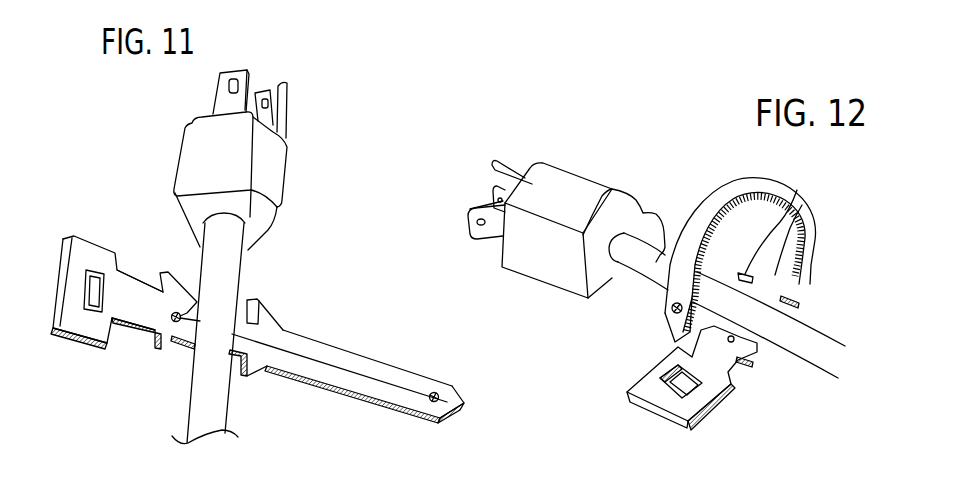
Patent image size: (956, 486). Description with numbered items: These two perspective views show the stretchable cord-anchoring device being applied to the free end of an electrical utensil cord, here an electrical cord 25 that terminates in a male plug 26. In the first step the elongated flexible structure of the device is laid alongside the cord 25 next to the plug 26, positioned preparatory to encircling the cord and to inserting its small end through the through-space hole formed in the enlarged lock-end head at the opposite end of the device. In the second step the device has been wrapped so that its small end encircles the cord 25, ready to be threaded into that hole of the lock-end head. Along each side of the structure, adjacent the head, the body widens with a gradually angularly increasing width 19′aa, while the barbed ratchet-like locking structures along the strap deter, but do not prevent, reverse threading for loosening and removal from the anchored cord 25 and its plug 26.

In FIG. 11, the male plug 26 is at (270, 166).
In FIG. 12, the male plug 26 is at (555, 263).
In FIG. 11, the electrical cord free-end 25 is at (207, 405).
In FIG. 12, the electrical cord free-end 25 is at (803, 340).
In FIG. 11, the gradually angularly increasing width 19′aa is at (250, 298).
In FIG. 12, the gradually angularly increasing width 19′aa is at (746, 273).